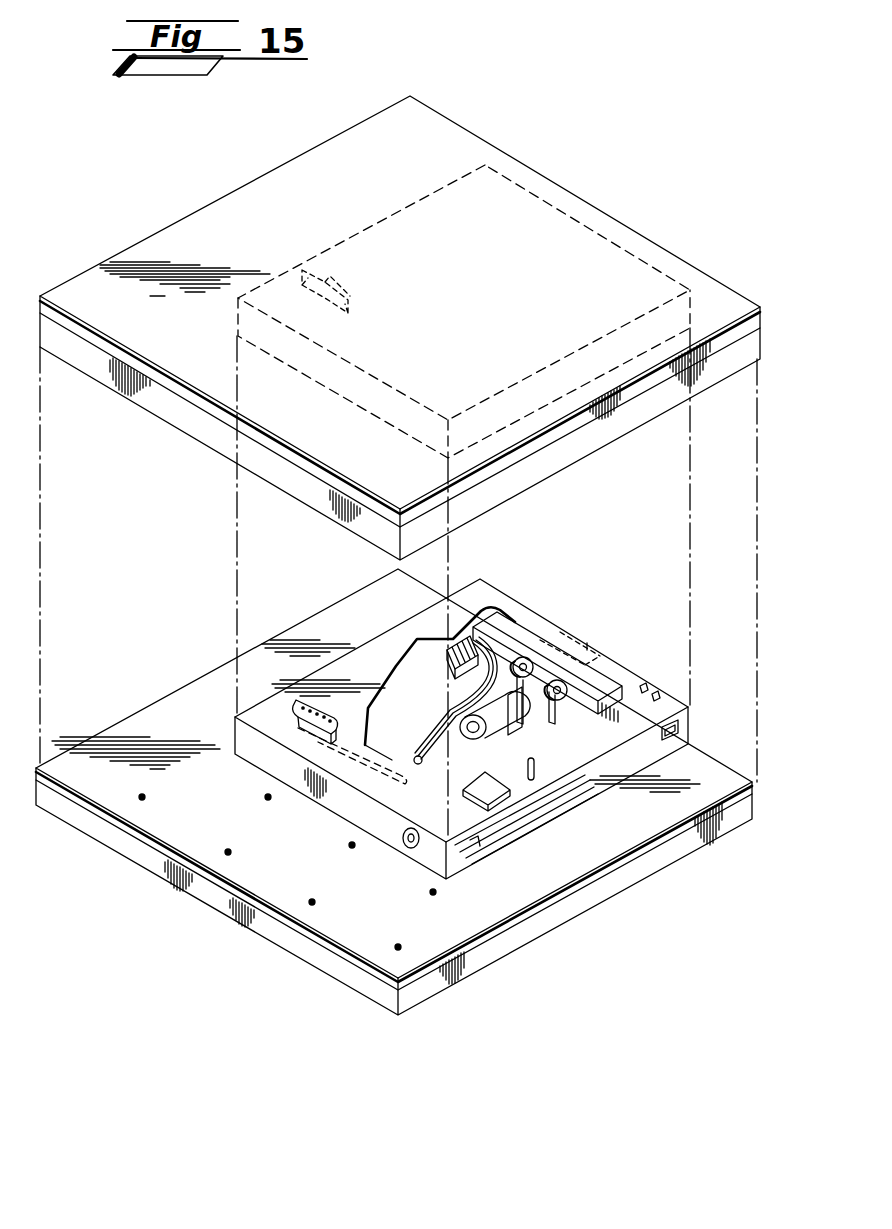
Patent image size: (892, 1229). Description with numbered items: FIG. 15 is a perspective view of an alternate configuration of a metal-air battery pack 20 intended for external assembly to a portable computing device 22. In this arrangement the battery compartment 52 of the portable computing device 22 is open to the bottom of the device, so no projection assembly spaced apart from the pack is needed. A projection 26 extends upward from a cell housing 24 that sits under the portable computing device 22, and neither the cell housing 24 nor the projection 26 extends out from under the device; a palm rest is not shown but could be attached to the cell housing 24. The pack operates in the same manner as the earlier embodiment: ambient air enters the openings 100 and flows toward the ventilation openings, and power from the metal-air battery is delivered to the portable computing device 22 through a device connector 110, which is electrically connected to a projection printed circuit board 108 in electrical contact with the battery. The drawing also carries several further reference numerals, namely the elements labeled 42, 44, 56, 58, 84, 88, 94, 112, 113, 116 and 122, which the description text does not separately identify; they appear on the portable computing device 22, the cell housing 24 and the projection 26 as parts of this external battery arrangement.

The battery pack 20 is at (113, 709).
The portable computing device 22 is at (128, 237).
The cell housing 24 is at (475, 960).
The projection 26 is at (355, 807).
The cover plate 42 is at (616, 428).
The upper body 44 is at (668, 368).
The battery compartment 52 is at (555, 304).
The lower body 56 is at (313, 960).
The base plate 58 is at (298, 928).
The drive module 84 is at (565, 635).
The rollers 88 is at (585, 624).
The fastener holes 94 is at (268, 797).
The openings 100 is at (648, 690).
The projection printed circuit board 108 is at (535, 790).
The device connector 110 is at (298, 735).
The recess 112 is at (338, 275).
The motor 113 is at (495, 800).
The pivot hole 116 is at (405, 848).
The switch 122 is at (663, 737).